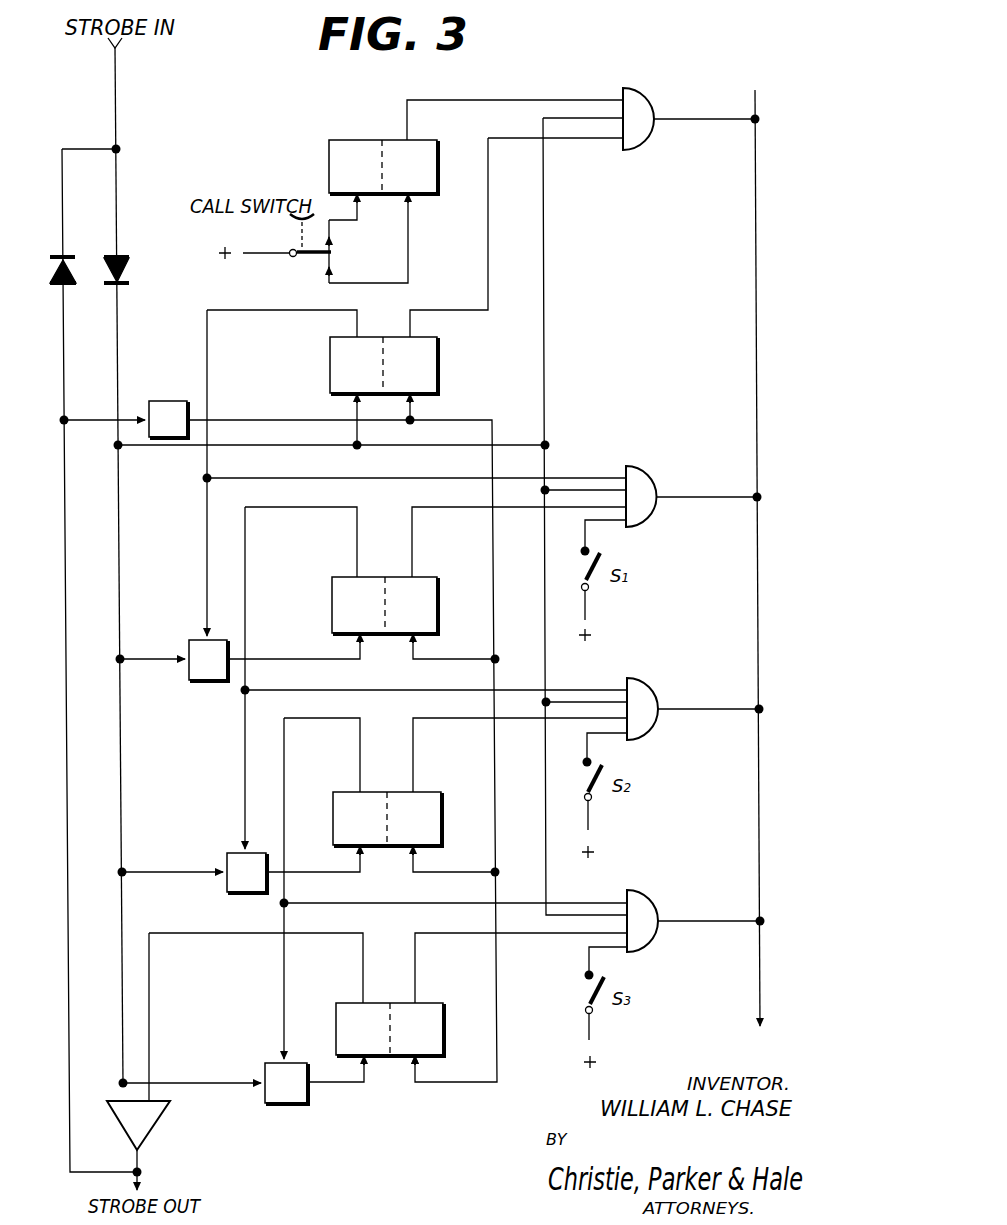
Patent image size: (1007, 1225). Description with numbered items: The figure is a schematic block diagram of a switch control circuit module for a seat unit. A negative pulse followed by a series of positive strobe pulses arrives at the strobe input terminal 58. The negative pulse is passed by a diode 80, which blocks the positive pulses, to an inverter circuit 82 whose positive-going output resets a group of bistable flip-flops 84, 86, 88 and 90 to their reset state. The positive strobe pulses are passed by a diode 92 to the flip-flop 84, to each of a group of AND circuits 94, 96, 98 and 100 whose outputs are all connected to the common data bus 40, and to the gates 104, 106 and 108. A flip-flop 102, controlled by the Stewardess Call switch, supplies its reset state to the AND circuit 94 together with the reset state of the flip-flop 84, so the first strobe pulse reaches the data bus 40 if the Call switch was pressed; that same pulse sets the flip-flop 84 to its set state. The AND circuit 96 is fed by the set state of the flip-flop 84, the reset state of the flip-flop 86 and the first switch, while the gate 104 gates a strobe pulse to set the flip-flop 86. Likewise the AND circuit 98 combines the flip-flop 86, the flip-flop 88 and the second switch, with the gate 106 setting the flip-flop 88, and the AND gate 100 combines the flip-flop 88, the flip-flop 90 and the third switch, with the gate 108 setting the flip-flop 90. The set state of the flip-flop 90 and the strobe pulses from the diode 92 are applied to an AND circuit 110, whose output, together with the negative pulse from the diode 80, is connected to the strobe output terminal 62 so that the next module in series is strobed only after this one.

The strobe input terminal 58 is at (112, 48).
The diode 80 is at (50, 272).
The diode 92 is at (128, 268).
The inverter circuit 82 is at (167, 401).
The flip-flop 102 is at (437, 184).
The bistable flip-flop 84 is at (438, 370).
The bistable flip-flop 86 is at (440, 612).
The bistable flip-flop 88 is at (443, 818).
The bistable flip-flop 90 is at (444, 1032).
The AND circuit 94 is at (650, 140).
The AND circuit 96 is at (655, 476).
The logical AND circuit 98 is at (655, 690).
The logical AND gate 100 is at (655, 900).
The common data bus 40 is at (757, 372).
The gate 104 is at (193, 638).
The gate 106 is at (232, 852).
The gate 108 is at (275, 1062).
The logical AND circuit 110 is at (160, 1128).
The strobe output terminal 62 is at (143, 1183).